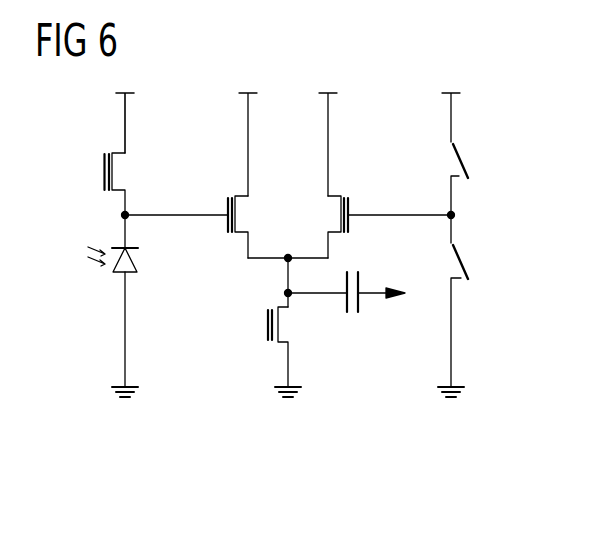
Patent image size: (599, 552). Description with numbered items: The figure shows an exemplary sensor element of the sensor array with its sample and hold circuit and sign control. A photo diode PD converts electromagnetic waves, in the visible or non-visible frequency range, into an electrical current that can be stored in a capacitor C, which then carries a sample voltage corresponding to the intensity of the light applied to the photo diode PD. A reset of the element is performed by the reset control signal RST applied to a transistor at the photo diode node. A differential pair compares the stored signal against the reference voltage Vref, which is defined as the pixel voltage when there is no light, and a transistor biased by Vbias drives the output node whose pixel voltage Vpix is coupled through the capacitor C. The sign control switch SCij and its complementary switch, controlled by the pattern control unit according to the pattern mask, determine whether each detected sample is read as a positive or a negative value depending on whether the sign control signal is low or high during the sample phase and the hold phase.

The reset control signal RST is at (104, 172).
The photo diode PD is at (138, 258).
The reference voltage Vref is at (288, 155).
The bias voltage transistor Vbias is at (268, 325).
The capacitor C is at (349, 315).
The pixel output voltage Vpix is at (395, 258).
The sign control switch signal SCij is at (466, 160).